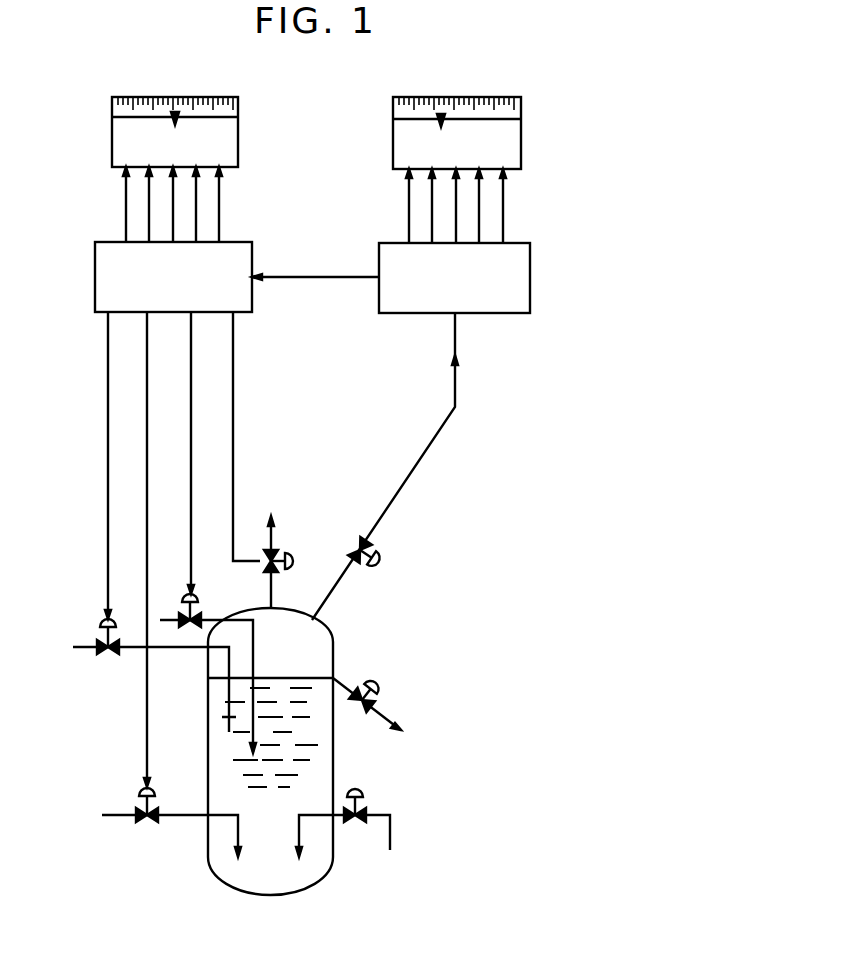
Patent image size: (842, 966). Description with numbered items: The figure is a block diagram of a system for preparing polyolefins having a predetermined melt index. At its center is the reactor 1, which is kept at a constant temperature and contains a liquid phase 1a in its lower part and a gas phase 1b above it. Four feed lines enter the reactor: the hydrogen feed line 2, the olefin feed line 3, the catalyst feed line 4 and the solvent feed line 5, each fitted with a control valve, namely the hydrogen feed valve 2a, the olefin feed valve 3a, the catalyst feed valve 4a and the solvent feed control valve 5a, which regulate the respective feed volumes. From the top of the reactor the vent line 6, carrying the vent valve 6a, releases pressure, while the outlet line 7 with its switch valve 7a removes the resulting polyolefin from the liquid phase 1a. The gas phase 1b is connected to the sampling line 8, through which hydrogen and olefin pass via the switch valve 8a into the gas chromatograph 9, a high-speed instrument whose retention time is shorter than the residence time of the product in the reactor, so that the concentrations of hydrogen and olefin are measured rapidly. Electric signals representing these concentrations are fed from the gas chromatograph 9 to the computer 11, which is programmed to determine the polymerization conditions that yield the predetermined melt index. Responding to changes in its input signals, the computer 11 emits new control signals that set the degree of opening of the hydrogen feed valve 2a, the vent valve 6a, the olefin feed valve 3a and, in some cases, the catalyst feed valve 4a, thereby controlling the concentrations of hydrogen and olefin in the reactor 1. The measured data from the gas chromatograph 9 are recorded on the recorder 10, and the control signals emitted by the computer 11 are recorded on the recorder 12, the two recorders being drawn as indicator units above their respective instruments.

The reactor 1 is at (305, 888).
The liquid phase 1a is at (258, 890).
The gas phase 1b is at (340, 648).
The hydrogen feed line 2 is at (200, 620).
The hydrogen feed valve 2a is at (180, 604).
The olefin feed line 3 is at (185, 655).
The olefin feed valve 3a is at (96, 656).
The catalyst feed line 4 is at (176, 820).
The catalyst feed valve 4a is at (134, 822).
The solvent feed line 5 is at (392, 812).
The solvent feed control valve 5a is at (360, 806).
The vent line 6 is at (276, 542).
The vent valve 6a is at (276, 570).
The outlet line 7 is at (385, 716).
The switch valve 7a is at (356, 712).
The sampling line 8 is at (344, 578).
The switch valve 8a is at (368, 545).
The gas chromatograph 9 is at (530, 271).
The recorder 10 is at (393, 136).
The computer 11 is at (252, 250).
The recorder 12 is at (238, 134).